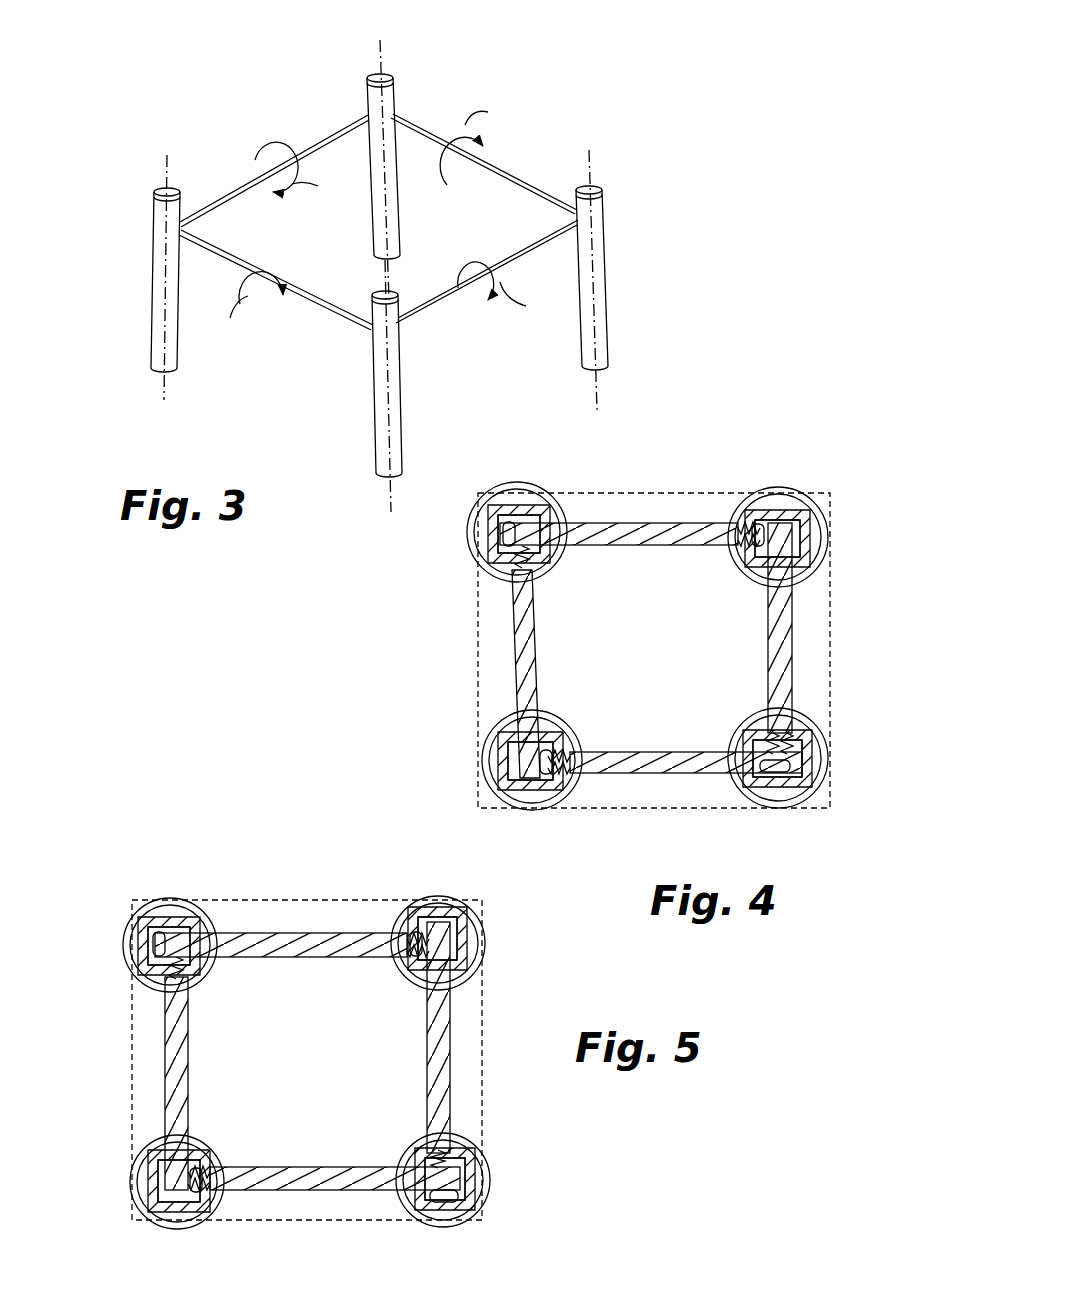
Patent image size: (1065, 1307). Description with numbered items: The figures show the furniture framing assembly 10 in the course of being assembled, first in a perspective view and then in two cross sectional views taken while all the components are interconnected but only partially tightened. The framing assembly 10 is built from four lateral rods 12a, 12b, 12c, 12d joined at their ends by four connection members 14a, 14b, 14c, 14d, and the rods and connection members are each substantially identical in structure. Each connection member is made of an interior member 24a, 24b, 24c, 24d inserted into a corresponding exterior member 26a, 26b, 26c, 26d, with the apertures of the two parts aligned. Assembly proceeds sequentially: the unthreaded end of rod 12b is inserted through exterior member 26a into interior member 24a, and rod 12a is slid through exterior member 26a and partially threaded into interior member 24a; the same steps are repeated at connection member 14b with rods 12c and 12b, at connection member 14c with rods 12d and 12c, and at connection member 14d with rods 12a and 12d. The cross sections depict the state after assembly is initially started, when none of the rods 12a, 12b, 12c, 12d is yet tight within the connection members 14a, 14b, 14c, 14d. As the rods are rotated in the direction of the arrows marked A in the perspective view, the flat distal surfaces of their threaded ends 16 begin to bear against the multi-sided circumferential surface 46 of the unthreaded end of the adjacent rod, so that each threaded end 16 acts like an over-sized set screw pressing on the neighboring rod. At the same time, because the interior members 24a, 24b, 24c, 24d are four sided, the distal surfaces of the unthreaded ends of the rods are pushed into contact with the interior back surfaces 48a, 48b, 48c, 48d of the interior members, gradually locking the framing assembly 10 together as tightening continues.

In FIG. 3, the furniture framing assembly 10 is at (625, 86).
In FIG. 4, the furniture framing assembly 10 is at (650, 406).
In FIG. 5, the furniture framing assembly 10 is at (110, 1036).
In FIG. 3, the rod 12a is at (306, 150).
In FIG. 4, the rod 12a is at (540, 680).
In FIG. 5, the rod 12a is at (190, 1082).
In FIG. 3, the rod 12b is at (503, 174).
In FIG. 4, the rod 12b is at (652, 548).
In FIG. 5, the rod 12b is at (313, 960).
In FIG. 3, the rod 12c is at (462, 290).
In FIG. 4, the rod 12c is at (766, 652).
In FIG. 5, the rod 12c is at (426, 1070).
In FIG. 3, the rod 12d is at (292, 287).
In FIG. 4, the rod 12d is at (640, 752).
In FIG. 5, the rod 12d is at (318, 1166).
In FIG. 3, the connection member 14a is at (416, 98).
In FIG. 3, the connection member 14b is at (622, 218).
In FIG. 3, the connection member 14c is at (348, 364).
In FIG. 3, the connection member 14d is at (128, 216).
In FIG. 4, the threaded end 16 is at (746, 520).
In FIG. 3, the interior member 24a is at (384, 72).
In FIG. 4, the interior member 24a is at (517, 500).
In FIG. 5, the interior member 24a is at (163, 918).
In FIG. 3, the interior member 24b is at (598, 186).
In FIG. 4, the interior member 24b is at (770, 508).
In FIG. 5, the interior member 24b is at (447, 906).
In FIG. 3, the interior member 24c is at (392, 288).
In FIG. 4, the interior member 24c is at (786, 796).
In FIG. 5, the interior member 24c is at (432, 1226).
In FIG. 3, the interior member 24d is at (172, 186).
In FIG. 4, the interior member 24d is at (500, 770).
In FIG. 5, the interior member 24d is at (142, 1180).
In FIG. 3, the exterior member 26a is at (400, 200).
In FIG. 4, the exterior member 26a is at (550, 506).
In FIG. 5, the exterior member 26a is at (200, 906).
In FIG. 3, the exterior member 26b is at (614, 272).
In FIG. 4, the exterior member 26b is at (812, 582).
In FIG. 5, the exterior member 26b is at (488, 938).
In FIG. 3, the exterior member 26c is at (404, 404).
In FIG. 4, the exterior member 26c is at (812, 722).
In FIG. 5, the exterior member 26c is at (455, 1230).
In FIG. 3, the exterior member 26d is at (152, 300).
In FIG. 4, the exterior member 26d is at (562, 796).
In FIG. 5, the exterior member 26d is at (200, 1226).
In FIG. 4, the circumferential surface 46 is at (530, 518).
In FIG. 4, the interior back surface 48a is at (500, 512).
In FIG. 5, the interior back surface 48a is at (152, 938).
In FIG. 4, the interior back surface 48b is at (782, 520).
In FIG. 5, the interior back surface 48b is at (410, 925).
In FIG. 4, the interior back surface 48c is at (806, 770).
In FIG. 5, the interior back surface 48c is at (470, 1166).
In FIG. 4, the interior back surface 48d is at (538, 792).
In FIG. 5, the interior back surface 48d is at (172, 1212).